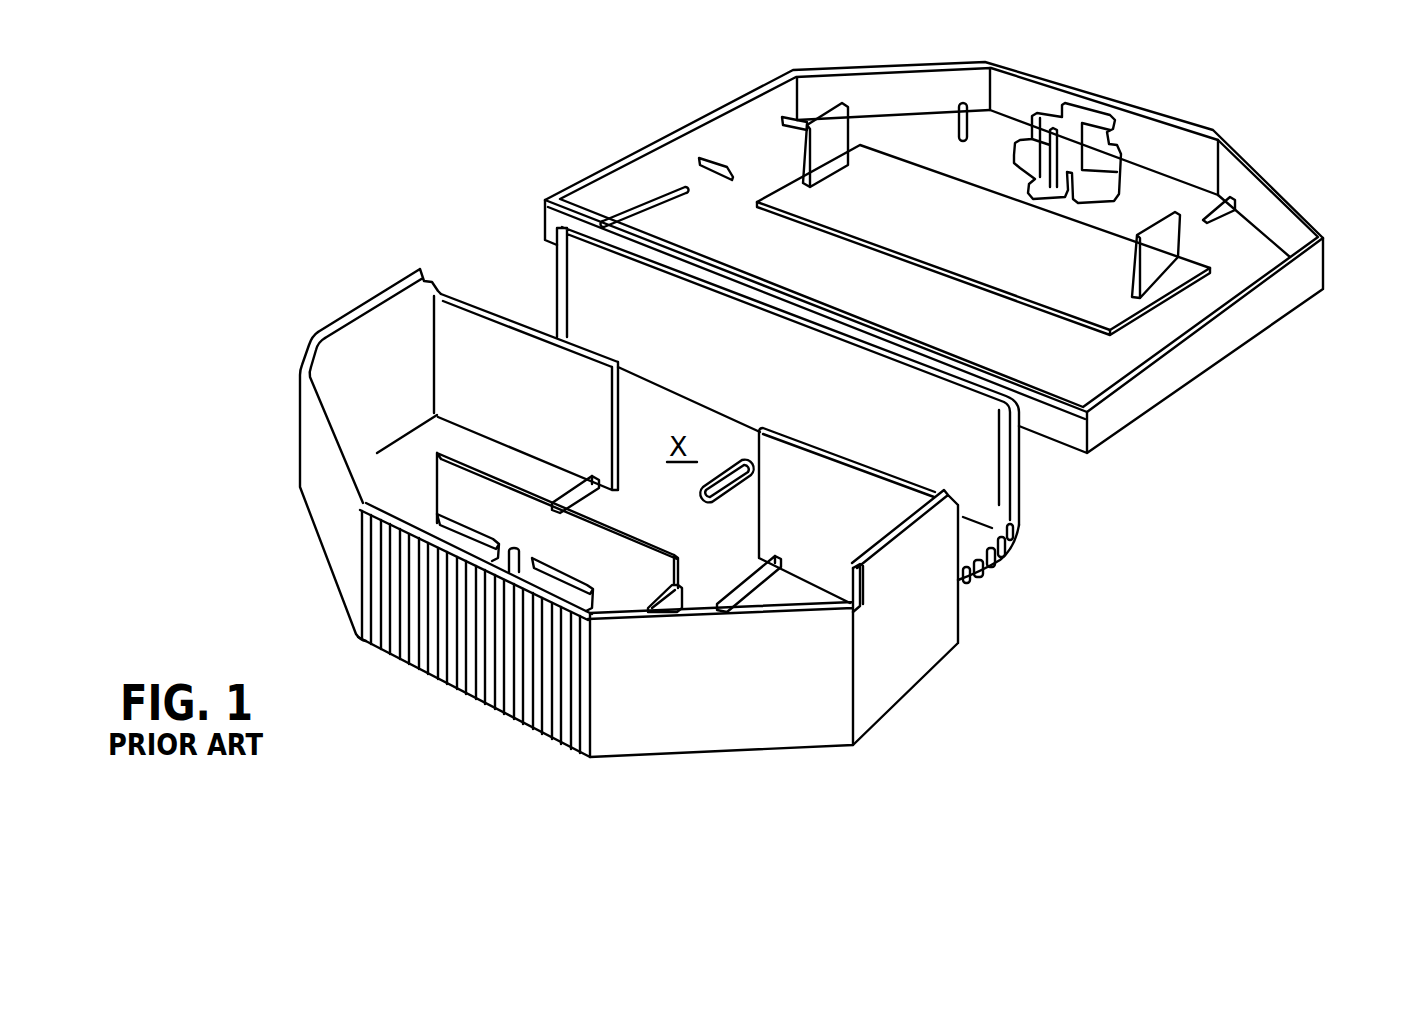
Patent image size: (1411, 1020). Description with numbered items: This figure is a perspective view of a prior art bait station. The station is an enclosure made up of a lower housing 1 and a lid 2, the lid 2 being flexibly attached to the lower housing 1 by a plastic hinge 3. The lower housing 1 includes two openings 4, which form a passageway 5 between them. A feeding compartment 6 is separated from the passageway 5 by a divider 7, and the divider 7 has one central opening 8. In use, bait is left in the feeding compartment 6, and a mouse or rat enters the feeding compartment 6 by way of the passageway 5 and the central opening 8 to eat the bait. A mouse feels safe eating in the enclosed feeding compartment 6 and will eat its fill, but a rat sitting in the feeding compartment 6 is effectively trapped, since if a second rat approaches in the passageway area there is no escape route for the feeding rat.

The lower housing 1 is at (903, 677).
The lid 2 is at (1310, 272).
The plastic hinge 3 is at (647, 243).
The openings 4 is at (521, 288).
The passageway 5 is at (678, 333).
The feeding compartment 6 is at (618, 518).
The divider 7 is at (528, 380).
The central opening 8 is at (672, 488).